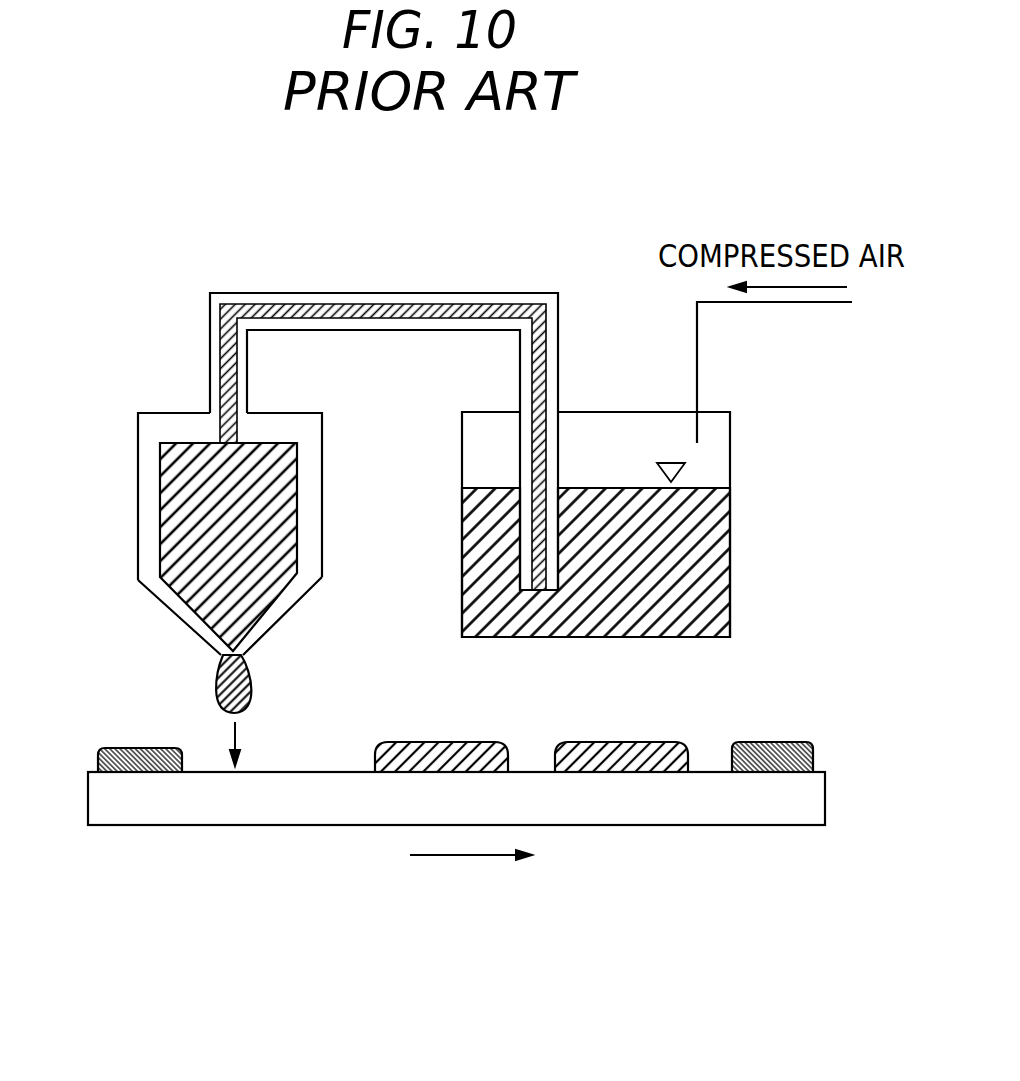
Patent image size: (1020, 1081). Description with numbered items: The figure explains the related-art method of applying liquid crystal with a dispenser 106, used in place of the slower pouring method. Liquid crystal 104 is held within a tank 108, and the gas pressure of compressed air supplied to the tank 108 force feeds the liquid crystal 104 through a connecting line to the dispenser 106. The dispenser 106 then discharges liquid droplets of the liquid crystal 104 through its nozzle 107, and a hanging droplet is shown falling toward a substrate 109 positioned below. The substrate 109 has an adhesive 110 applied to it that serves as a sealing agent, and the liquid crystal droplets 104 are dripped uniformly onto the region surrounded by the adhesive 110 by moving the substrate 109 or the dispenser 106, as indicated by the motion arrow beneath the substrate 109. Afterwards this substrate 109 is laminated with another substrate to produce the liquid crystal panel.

The liquid crystal 104 is at (243, 671).
The dispenser 106 is at (186, 543).
The nozzle 107 is at (221, 660).
The tank 108 is at (730, 445).
The substrate 109 is at (200, 810).
The adhesive 110 is at (132, 748).